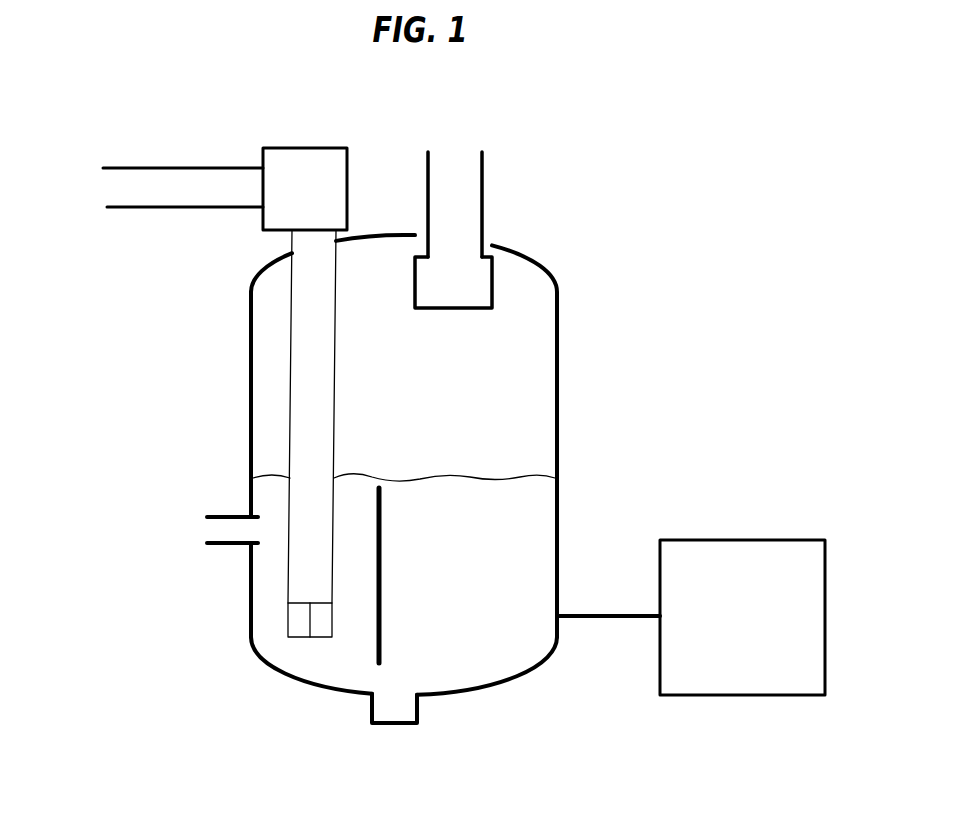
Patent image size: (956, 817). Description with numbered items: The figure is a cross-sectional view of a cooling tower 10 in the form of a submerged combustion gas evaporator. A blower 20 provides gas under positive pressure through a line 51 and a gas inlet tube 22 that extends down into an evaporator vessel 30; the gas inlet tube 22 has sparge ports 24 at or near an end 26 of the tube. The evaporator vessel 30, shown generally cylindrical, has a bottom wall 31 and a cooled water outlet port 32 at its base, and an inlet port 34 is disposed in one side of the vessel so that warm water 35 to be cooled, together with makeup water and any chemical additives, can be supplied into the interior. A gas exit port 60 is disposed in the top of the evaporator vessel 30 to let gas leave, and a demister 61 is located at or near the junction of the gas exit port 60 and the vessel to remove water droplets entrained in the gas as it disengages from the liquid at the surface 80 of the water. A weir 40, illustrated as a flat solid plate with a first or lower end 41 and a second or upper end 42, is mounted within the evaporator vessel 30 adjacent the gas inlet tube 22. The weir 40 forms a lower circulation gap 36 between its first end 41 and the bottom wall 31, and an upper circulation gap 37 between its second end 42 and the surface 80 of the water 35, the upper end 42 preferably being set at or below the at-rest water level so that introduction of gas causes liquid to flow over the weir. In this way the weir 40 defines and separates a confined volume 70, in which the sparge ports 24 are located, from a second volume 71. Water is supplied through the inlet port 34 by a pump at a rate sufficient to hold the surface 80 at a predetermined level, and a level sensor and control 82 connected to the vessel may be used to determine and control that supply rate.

The cooling tower 10 is at (222, 443).
The blower 20 is at (275, 212).
The gas inlet tube 22 is at (303, 355).
The sparge ports 24 is at (288, 624).
The end of gas inlet tube 26 is at (293, 640).
The evaporator vessel 30 is at (562, 313).
The bottom wall 31 is at (475, 690).
The cooled water outlet port 32 is at (395, 708).
The inlet port 34 is at (207, 543).
The warm water 35 is at (543, 495).
The lower circulation gap 36 is at (381, 670).
The upper circulation gap 37 is at (369, 487).
The weir 40 is at (382, 598).
The first end of weir 41 is at (382, 667).
The second end of weir 42 is at (383, 487).
The line 51 is at (112, 208).
The gas exit port 60 is at (455, 185).
The demister 61 is at (475, 283).
The confined volume 70 is at (360, 647).
The volume 71 is at (533, 556).
The surface of the water 80 is at (510, 473).
The level sensor and control 82 is at (742, 537).